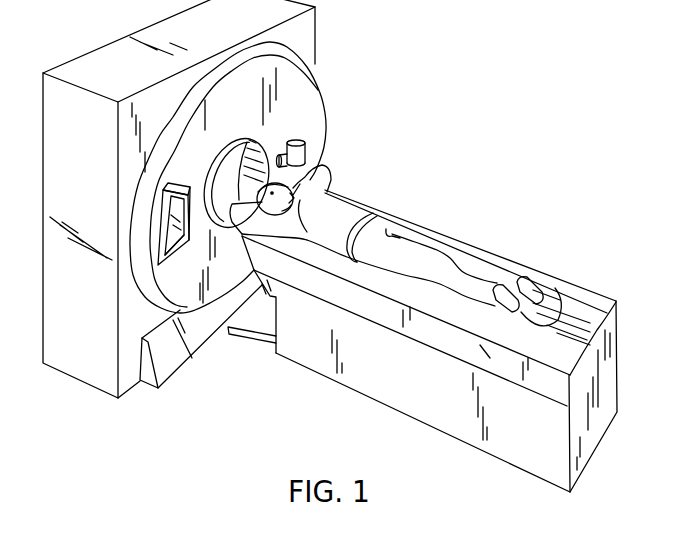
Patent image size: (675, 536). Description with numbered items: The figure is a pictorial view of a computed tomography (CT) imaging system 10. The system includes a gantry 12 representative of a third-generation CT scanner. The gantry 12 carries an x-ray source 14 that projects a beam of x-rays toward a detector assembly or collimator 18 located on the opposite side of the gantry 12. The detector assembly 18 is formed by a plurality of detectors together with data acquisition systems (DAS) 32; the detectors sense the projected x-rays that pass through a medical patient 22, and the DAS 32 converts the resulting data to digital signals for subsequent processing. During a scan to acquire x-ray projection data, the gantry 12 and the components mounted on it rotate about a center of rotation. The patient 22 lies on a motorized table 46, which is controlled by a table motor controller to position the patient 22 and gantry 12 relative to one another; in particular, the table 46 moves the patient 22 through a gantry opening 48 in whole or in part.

The computed tomography (CT) imaging system 10 is at (430, 90).
The gantry 12 is at (321, 116).
The x-ray source 14 is at (306, 148).
The detector assembly or collimator 18 is at (177, 250).
The medical patient 22 is at (340, 204).
The data acquisition systems (DAS) 32 is at (184, 185).
The motorized table 46 is at (403, 402).
The gantry opening 48 is at (224, 170).